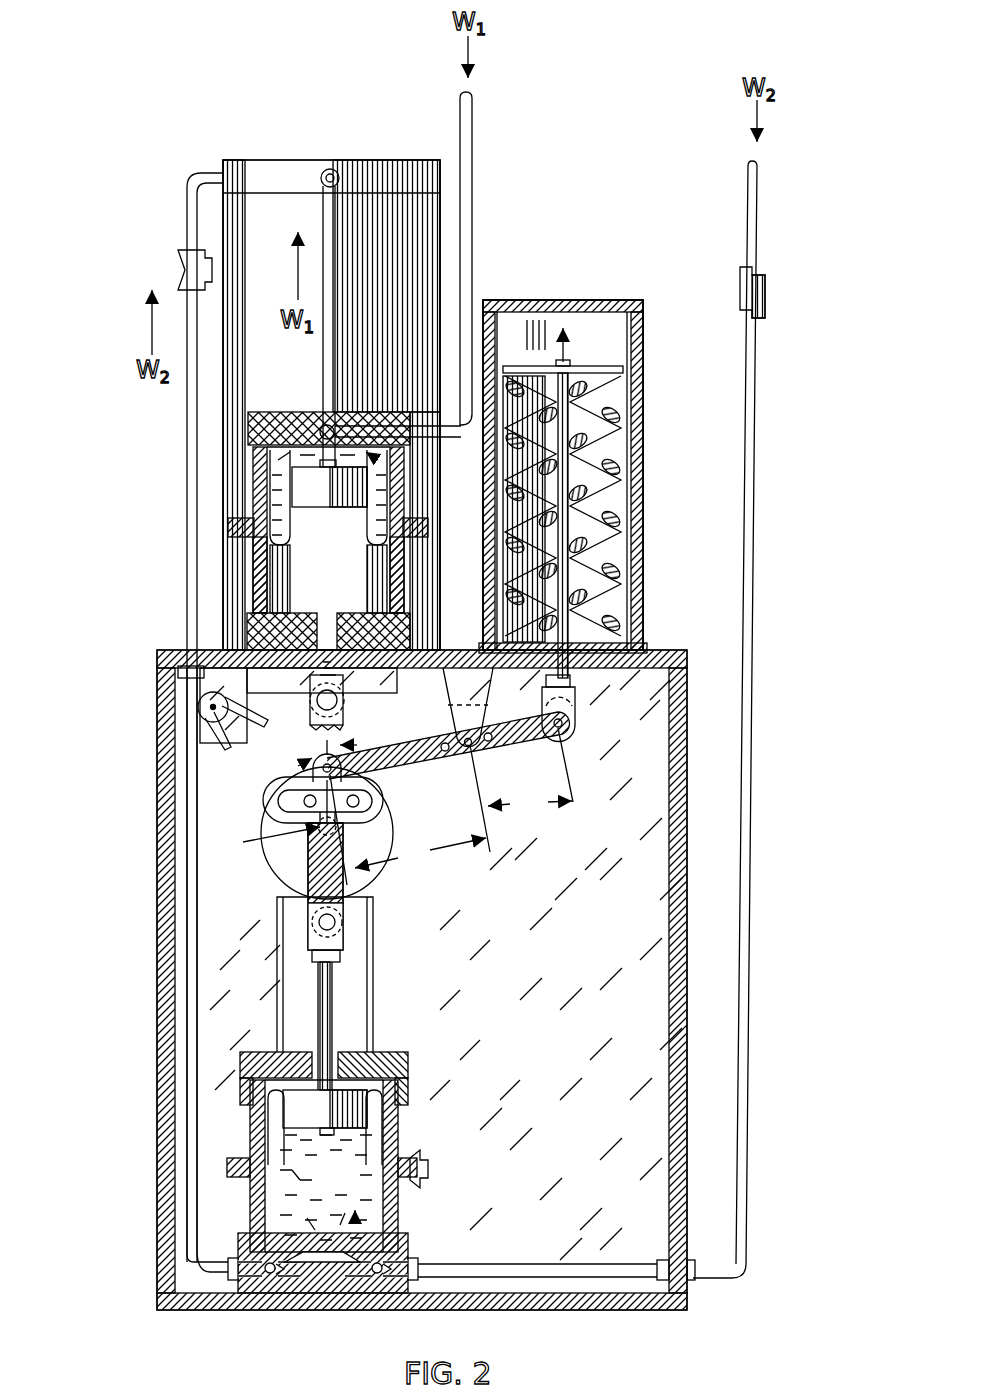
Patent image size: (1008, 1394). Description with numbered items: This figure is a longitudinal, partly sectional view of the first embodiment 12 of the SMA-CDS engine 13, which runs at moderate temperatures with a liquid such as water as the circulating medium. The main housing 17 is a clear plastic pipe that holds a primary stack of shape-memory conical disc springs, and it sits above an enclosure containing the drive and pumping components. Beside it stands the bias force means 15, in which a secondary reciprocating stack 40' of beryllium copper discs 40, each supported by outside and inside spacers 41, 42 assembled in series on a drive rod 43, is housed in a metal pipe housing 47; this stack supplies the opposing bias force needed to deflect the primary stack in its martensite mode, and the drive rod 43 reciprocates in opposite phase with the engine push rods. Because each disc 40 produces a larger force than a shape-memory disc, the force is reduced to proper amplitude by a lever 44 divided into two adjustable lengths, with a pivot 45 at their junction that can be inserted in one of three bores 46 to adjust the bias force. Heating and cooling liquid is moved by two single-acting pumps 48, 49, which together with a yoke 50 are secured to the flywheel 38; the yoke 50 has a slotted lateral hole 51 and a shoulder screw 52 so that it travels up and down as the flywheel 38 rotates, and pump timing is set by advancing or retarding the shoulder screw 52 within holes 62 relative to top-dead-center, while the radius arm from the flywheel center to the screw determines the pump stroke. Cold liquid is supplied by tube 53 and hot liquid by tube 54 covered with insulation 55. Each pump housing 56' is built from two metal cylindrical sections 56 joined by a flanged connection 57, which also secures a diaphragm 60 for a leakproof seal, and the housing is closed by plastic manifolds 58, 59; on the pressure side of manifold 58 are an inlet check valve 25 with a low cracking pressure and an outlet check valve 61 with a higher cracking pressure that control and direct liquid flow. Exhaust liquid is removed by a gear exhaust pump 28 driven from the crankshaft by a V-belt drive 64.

The first embodiment 12 is at (176, 138).
The SMA-CDS engine 13 is at (563, 158).
The bias force means 15 is at (600, 292).
The main housing 17 is at (224, 242).
The inlet check valve 25 is at (379, 1280).
The exhaust pump 28 is at (212, 707).
The flywheel 38 is at (284, 872).
The Be-Cu CDS disc 40 is at (634, 525).
The secondary reciprocating stack 40' is at (604, 341).
The outside spacer 41 is at (636, 474).
The inside spacer 42 is at (590, 507).
The drive rod 43 is at (572, 593).
The lever 44 is at (562, 738).
The pivot 45 is at (456, 742).
The bore 46 is at (490, 744).
The metal pipe housing 47 is at (640, 557).
The pump 48 is at (228, 1168).
The pump 49 is at (258, 470).
The yoke 50 is at (345, 913).
The slotted lateral hole 51 is at (338, 792).
The shoulder screw 52 is at (300, 799).
The tube 53 is at (477, 264).
The tube 54 is at (761, 238).
The insulation 55 is at (766, 297).
The metal cylindrical section 56 is at (248, 893).
The pump housing 56' is at (395, 1122).
The flanged connection 57 is at (230, 522).
The manifold 58 is at (290, 412).
The manifold 59 is at (248, 630).
The diaphragm 60 is at (376, 538).
The outlet check valve 61 is at (270, 1280).
The holes 62 is at (362, 805).
The V-belt drive 64 is at (220, 746).